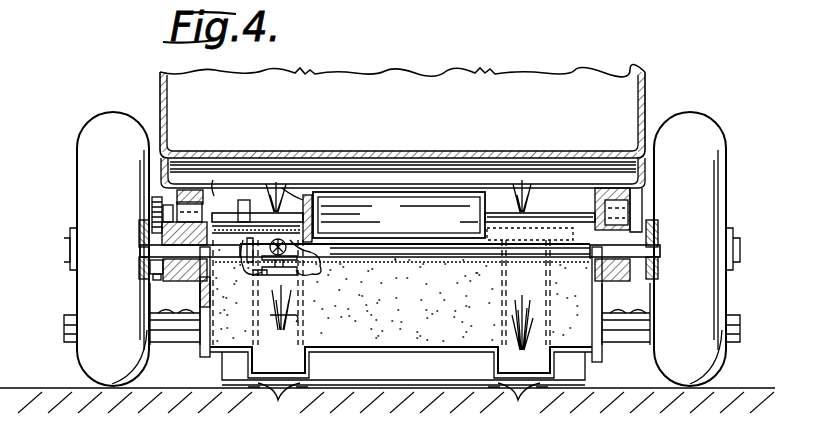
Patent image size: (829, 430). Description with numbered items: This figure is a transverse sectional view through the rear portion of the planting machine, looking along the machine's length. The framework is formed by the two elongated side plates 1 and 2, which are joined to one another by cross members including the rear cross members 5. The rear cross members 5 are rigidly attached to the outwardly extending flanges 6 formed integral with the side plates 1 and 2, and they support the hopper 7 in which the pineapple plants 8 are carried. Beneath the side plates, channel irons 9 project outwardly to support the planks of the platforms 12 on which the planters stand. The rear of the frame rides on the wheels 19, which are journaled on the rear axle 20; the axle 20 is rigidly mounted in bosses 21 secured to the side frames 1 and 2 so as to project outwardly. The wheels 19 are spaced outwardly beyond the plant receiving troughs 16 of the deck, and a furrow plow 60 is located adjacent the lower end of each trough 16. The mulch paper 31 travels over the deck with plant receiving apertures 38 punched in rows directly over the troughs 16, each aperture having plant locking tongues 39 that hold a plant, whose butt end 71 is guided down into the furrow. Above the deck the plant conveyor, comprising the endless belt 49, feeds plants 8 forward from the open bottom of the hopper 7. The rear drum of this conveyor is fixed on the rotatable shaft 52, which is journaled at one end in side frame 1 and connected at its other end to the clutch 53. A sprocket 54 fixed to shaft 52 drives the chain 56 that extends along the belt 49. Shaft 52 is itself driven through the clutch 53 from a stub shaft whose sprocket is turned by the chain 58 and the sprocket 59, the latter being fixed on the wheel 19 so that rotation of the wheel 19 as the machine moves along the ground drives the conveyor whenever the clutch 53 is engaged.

The side plate 1 is at (604, 357).
The side plate 2 is at (200, 354).
The rear cross member 5 is at (424, 172).
The outwardly extending flange 6 is at (178, 200).
The hopper 7 is at (442, 78).
The pineapple plant 8 is at (535, 314).
The channel iron 9 is at (63, 333).
The platform 12 is at (70, 314).
The plant receiving trough 16 is at (505, 350).
The wheel 19 is at (80, 152).
The rear axle 20 is at (68, 250).
The boss 21 is at (400, 302).
The mulch paper 31 is at (262, 236).
The plant receiving aperture 38 is at (288, 314).
The plant locking tongue 39 is at (299, 262).
The endless belt 49 is at (399, 215).
The rotatable shaft 52 is at (568, 214).
The clutch 53 is at (214, 190).
The sprocket 54 is at (320, 192).
The chain 56 is at (291, 194).
The chain 58 is at (150, 212).
The sprocket 59 is at (148, 267).
The furrow plow 60 is at (272, 392).
The butt end 71 is at (548, 360).